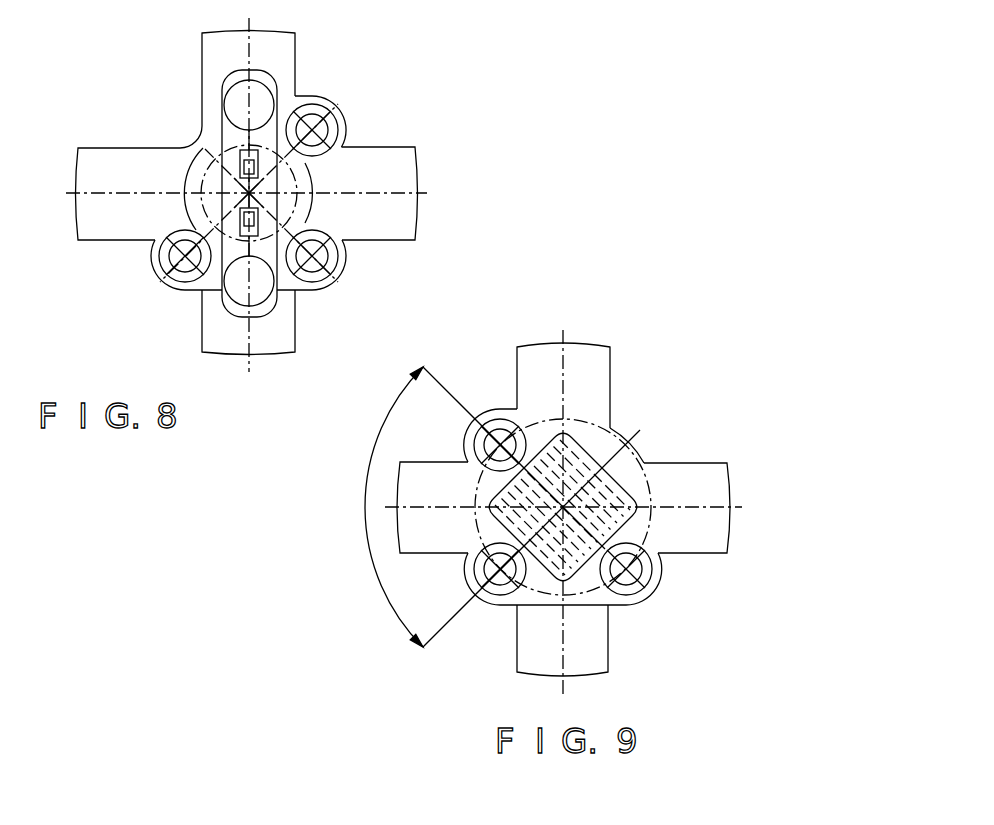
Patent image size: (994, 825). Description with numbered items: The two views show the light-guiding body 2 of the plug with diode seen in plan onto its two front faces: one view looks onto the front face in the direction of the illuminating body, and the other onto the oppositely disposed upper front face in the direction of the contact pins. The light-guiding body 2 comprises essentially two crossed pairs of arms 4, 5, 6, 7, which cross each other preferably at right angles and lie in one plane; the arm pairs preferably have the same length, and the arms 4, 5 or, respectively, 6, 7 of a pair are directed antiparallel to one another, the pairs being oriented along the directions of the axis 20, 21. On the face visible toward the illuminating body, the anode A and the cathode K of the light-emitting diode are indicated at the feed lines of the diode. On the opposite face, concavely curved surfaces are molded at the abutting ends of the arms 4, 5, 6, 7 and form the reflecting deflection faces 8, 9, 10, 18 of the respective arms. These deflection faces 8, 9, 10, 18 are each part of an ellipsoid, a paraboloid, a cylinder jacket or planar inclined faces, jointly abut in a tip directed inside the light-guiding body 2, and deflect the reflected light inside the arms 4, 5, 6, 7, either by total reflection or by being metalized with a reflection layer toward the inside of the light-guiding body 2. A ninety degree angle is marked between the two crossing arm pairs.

In FIG. 8, the light-guiding body 2 is at (343, 121).
In FIG. 9, the light-guiding body 2 is at (582, 456).
In FIG. 8, the arm 4 is at (288, 80).
In FIG. 9, the arm 4 is at (590, 352).
In FIG. 8, the arm 5 is at (200, 353).
In FIG. 9, the arm 5 is at (607, 623).
In FIG. 8, the arm 6 is at (388, 157).
In FIG. 9, the arm 6 is at (413, 525).
In FIG. 8, the arm 7 is at (97, 165).
In FIG. 9, the arm 7 is at (697, 470).
In FIG. 9, the deflection face 8 is at (518, 595).
In FIG. 9, the deflection face 9 is at (585, 452).
In FIG. 9, the deflection face 10 is at (643, 533).
In FIG. 9, the deflection face 18 is at (528, 516).
In FIG. 9, the direction of the axis 20 is at (710, 508).
In FIG. 9, the direction of the axis 21 is at (563, 342).